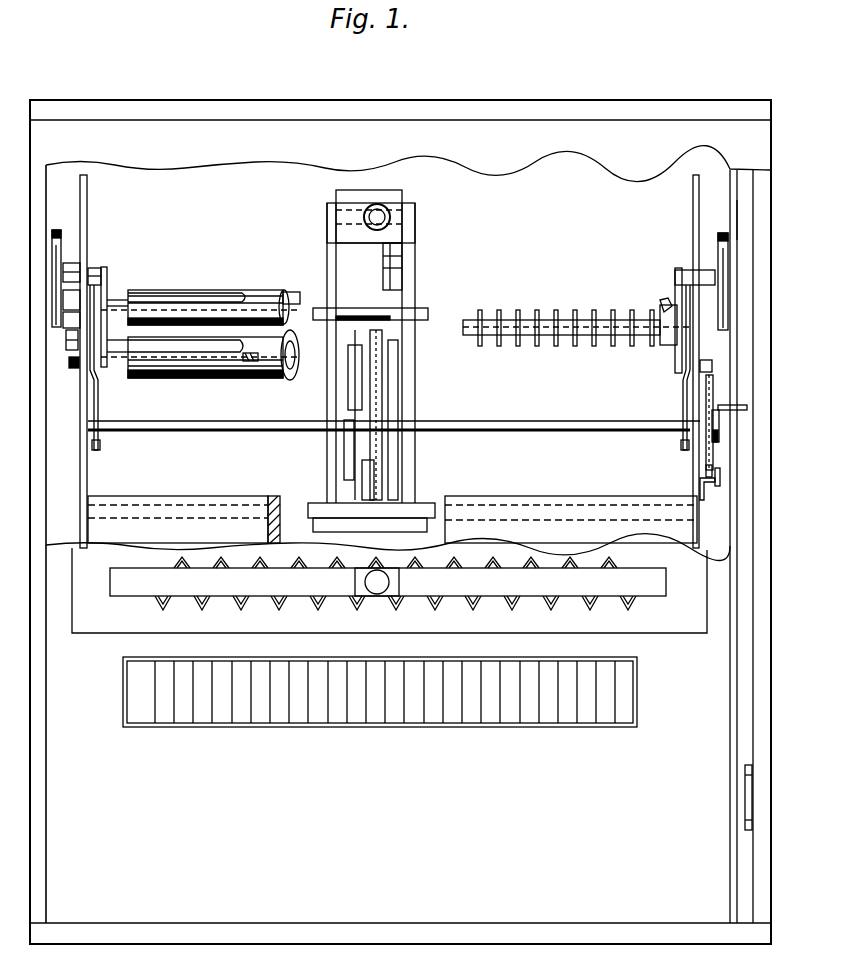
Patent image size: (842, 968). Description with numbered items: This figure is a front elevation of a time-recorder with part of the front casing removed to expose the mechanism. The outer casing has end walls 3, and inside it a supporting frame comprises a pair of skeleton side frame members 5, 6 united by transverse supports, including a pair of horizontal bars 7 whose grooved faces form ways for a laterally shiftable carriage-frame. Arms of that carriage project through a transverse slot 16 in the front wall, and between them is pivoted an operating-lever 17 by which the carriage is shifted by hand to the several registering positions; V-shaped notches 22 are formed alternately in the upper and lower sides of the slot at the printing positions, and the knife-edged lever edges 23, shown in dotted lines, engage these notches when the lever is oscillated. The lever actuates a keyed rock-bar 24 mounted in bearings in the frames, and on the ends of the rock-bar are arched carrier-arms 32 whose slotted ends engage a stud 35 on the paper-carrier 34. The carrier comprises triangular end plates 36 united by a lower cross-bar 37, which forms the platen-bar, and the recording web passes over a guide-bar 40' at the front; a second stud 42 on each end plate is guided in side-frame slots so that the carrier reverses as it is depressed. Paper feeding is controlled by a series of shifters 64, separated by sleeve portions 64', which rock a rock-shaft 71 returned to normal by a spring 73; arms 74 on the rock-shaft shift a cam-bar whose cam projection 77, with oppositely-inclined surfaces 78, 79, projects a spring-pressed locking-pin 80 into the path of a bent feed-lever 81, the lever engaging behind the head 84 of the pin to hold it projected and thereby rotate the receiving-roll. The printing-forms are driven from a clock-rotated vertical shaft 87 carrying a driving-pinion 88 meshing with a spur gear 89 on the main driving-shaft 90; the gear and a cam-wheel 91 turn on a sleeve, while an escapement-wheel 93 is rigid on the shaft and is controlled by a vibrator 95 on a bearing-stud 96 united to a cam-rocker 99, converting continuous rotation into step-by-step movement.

The end walls 3 is at (752, 680).
The skeleton side frame member 5 is at (87, 226).
The skeleton side frame member 6 is at (693, 218).
The bars 7 is at (236, 497).
The slot 16 is at (652, 598).
The operating-lever 17 is at (364, 212).
The V-shaped notches 22 is at (158, 598).
The knife-edged lever edges 23 is at (389, 210).
The rock-bar 24 is at (313, 316).
The carrier-arms 32 is at (76, 268).
The paper-carrier 34 is at (251, 300).
The stud 35 is at (98, 272).
The end plates 36 is at (108, 283).
The lower cross-bar 37 is at (213, 357).
The guide-bar 40' is at (186, 280).
The stud 42 is at (74, 370).
The shifters 64 is at (576, 347).
The sleeve portion 64' is at (566, 313).
The rock-shaft 71 is at (293, 291).
The spring 73 is at (661, 304).
The arm 74 is at (75, 265).
The cam projection 77 is at (72, 328).
The inclined surface 78 is at (68, 300).
The inclined surface 79 is at (74, 340).
The locking-pin 80 is at (96, 374).
The bent feed-lever 81 is at (100, 446).
The head 84 is at (116, 333).
The vertical shaft 87 is at (735, 216).
The driving-pinion 88 is at (746, 408).
The spur gear 89 is at (718, 438).
The main driving-shaft 90 is at (600, 421).
The cam-wheel 91 is at (712, 385).
The escapement-wheel 93 is at (714, 371).
The vibrator 95 is at (700, 479).
The bearing-stud 96 is at (720, 480).
The cam-rocker 99 is at (710, 480).